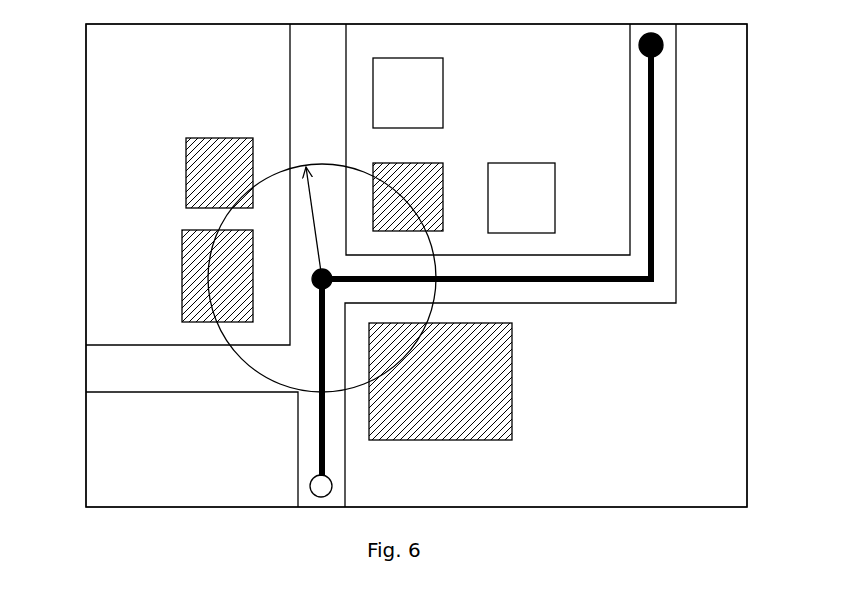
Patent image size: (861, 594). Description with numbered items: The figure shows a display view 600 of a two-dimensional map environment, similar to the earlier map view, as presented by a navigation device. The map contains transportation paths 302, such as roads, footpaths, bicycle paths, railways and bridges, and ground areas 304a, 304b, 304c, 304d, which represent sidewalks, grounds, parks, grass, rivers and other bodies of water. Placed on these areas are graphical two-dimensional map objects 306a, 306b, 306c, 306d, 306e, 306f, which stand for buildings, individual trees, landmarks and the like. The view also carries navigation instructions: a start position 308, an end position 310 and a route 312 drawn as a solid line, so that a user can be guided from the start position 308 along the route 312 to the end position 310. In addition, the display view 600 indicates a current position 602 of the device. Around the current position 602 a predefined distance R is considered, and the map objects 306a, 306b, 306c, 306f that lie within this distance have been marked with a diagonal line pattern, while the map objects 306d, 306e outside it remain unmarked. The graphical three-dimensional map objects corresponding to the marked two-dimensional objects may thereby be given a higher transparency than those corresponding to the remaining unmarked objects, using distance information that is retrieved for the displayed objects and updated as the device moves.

The display view 600 is at (724, 512).
The transportation paths 302 is at (173, 369).
The ground area 304a is at (161, 87).
The ground area 304b is at (515, 87).
The ground area 304c is at (166, 458).
The ground area 304d is at (635, 462).
The graphical two-dimensional map object 306a is at (192, 287).
The graphical two-dimensional map object 306b is at (414, 392).
The graphical two-dimensional map object 306c is at (195, 183).
The graphical two-dimensional map object 306d is at (382, 103).
The graphical two-dimensional map object 306e is at (496, 208).
The graphical two-dimensional map object 306f is at (386, 207).
The start position 308 is at (321, 497).
The end position 310 is at (657, 55).
The route 312 is at (642, 285).
The current position 602 is at (312, 272).